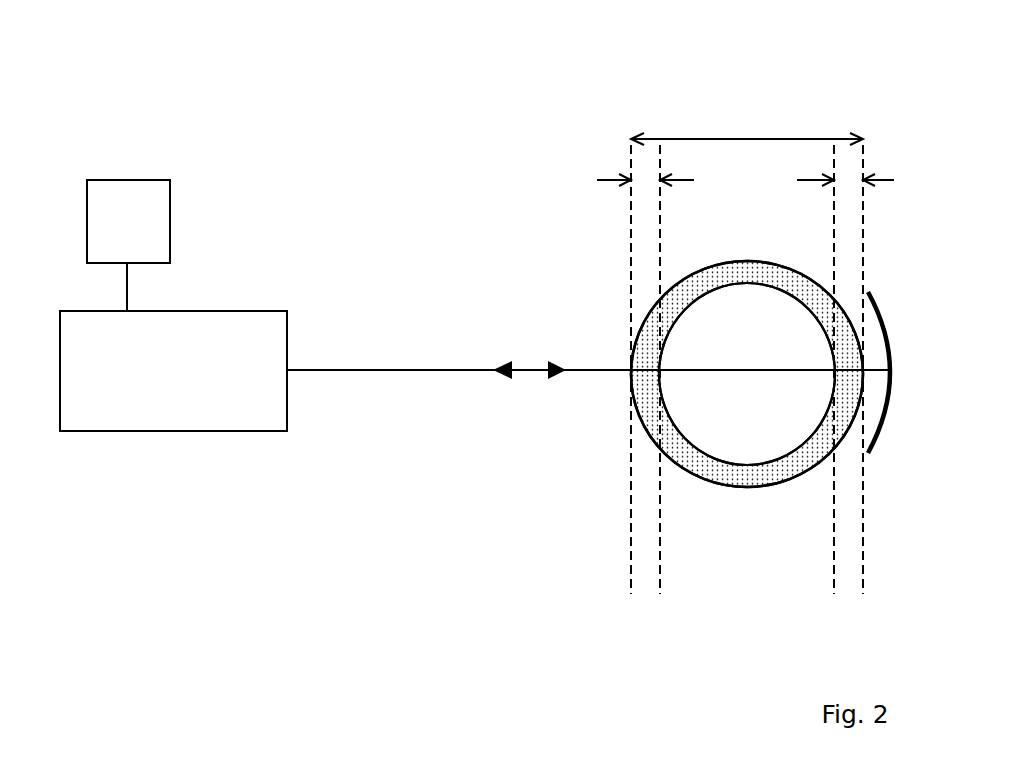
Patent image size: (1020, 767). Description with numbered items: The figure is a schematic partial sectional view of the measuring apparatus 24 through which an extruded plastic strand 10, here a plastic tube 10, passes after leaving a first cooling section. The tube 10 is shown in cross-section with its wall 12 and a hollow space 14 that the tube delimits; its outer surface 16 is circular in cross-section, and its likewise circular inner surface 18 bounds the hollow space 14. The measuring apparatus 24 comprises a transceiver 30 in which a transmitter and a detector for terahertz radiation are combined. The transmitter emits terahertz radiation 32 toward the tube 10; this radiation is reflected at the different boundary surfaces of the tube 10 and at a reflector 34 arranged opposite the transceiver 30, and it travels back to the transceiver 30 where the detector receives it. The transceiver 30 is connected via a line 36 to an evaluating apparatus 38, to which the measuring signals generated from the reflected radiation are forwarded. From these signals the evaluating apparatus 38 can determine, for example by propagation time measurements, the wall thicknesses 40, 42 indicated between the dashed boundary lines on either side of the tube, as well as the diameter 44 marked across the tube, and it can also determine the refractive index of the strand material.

The strand 10 is at (756, 242).
The wall 12 is at (727, 473).
The hollow space 14 is at (762, 440).
The outer surface 16 is at (680, 468).
The inner surface 18 is at (792, 297).
The measuring apparatus 24 is at (244, 143).
The transceiver 30 is at (218, 337).
The terahertz radiation 32 is at (459, 368).
The reflector 34 is at (884, 326).
The line 36 is at (127, 282).
The evaluating apparatus 38 is at (137, 213).
The wall thickness 40 is at (618, 179).
The wall thickness 42 is at (880, 181).
The diameter 44 is at (727, 139).